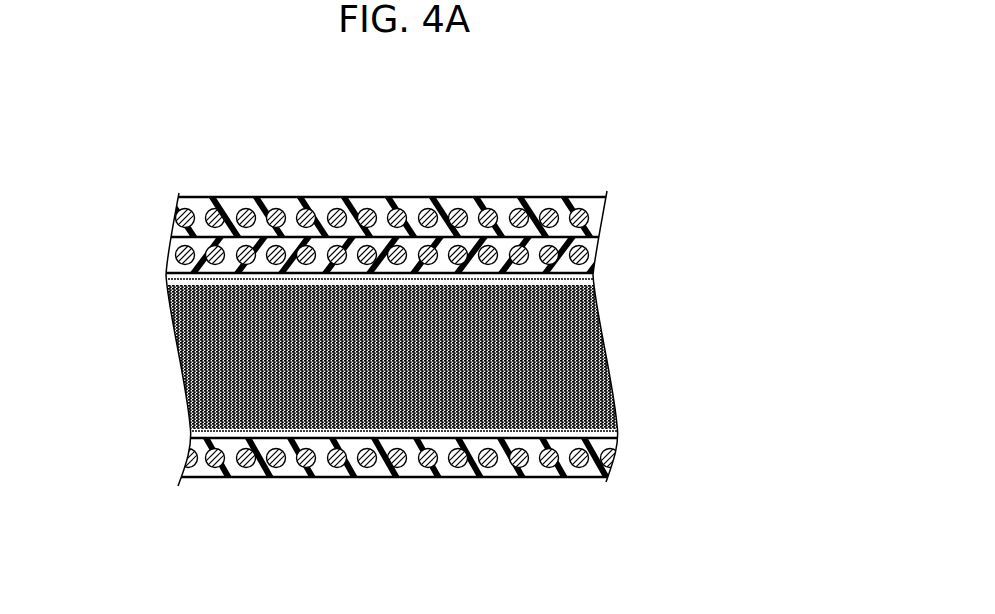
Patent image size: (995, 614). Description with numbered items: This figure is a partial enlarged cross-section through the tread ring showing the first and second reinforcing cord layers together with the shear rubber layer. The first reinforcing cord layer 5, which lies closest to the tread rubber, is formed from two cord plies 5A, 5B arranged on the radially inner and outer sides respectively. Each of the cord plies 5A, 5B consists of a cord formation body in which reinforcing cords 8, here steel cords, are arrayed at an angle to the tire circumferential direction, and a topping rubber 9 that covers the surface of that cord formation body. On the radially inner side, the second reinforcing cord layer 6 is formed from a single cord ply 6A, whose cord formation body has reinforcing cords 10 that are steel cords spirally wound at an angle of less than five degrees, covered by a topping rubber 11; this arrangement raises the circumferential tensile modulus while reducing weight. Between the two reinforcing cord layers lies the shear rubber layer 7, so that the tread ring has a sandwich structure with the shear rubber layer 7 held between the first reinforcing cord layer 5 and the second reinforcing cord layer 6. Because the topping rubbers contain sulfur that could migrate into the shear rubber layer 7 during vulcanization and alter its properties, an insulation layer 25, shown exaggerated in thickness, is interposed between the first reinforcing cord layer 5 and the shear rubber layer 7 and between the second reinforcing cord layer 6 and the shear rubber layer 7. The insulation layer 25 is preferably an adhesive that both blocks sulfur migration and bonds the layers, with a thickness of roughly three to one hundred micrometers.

The first reinforcing cord layer 5 is at (463, 190).
The cord ply 5A is at (567, 262).
The cord ply 5B is at (437, 161).
The second reinforcing cord layer 6 is at (464, 511).
The cord ply 6A is at (464, 511).
The shear rubber layer 7 is at (580, 362).
The reinforcing cords 8 is at (337, 208).
The topping rubber 9 is at (322, 208).
The reinforcing cords 10 is at (366, 466).
The topping rubber 11 is at (450, 468).
The insulation layer 25 is at (240, 275).